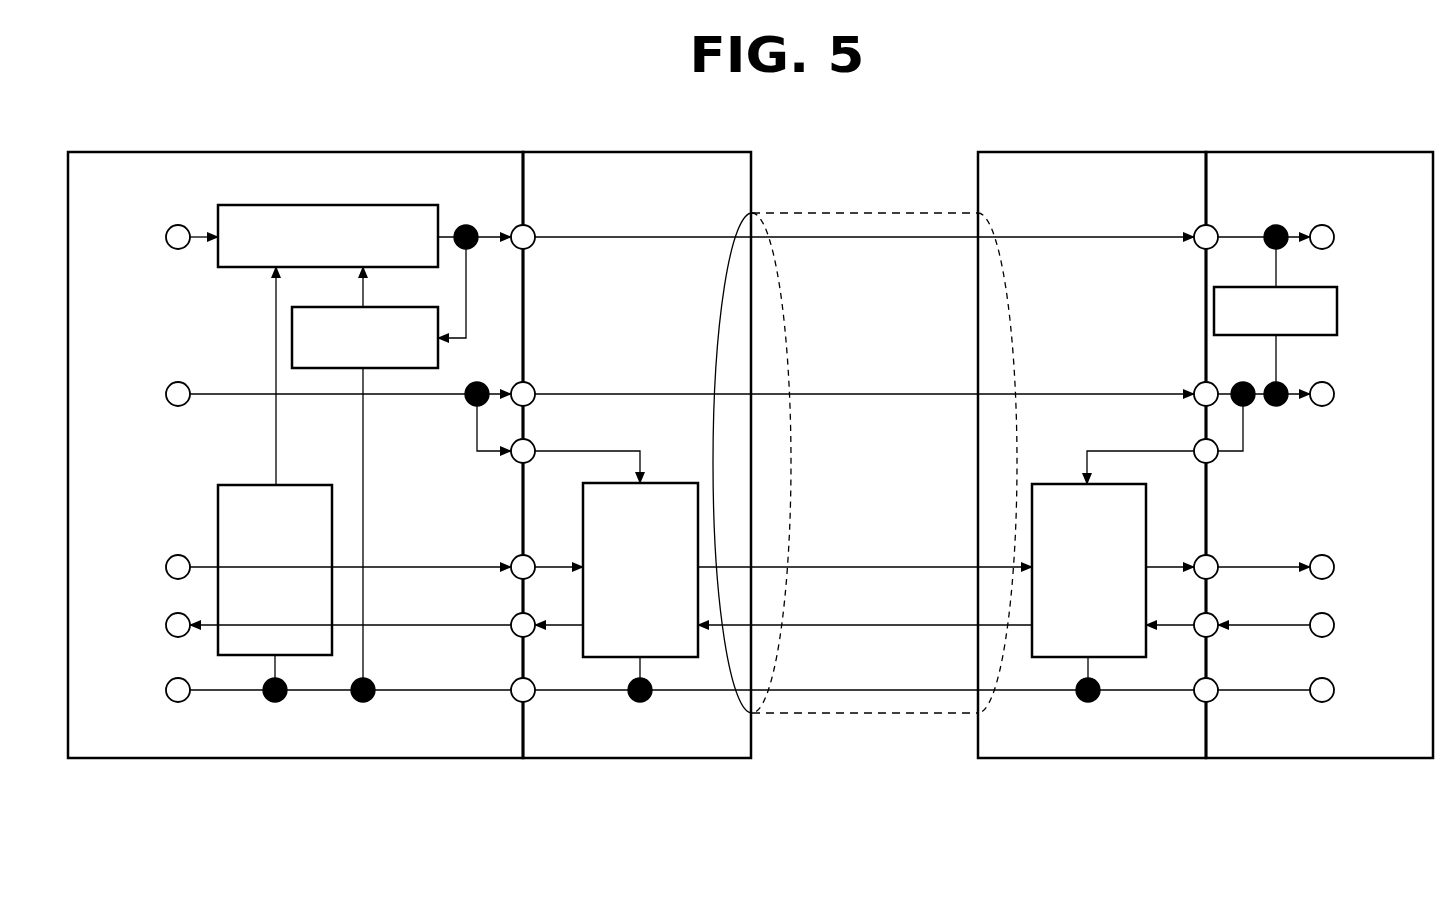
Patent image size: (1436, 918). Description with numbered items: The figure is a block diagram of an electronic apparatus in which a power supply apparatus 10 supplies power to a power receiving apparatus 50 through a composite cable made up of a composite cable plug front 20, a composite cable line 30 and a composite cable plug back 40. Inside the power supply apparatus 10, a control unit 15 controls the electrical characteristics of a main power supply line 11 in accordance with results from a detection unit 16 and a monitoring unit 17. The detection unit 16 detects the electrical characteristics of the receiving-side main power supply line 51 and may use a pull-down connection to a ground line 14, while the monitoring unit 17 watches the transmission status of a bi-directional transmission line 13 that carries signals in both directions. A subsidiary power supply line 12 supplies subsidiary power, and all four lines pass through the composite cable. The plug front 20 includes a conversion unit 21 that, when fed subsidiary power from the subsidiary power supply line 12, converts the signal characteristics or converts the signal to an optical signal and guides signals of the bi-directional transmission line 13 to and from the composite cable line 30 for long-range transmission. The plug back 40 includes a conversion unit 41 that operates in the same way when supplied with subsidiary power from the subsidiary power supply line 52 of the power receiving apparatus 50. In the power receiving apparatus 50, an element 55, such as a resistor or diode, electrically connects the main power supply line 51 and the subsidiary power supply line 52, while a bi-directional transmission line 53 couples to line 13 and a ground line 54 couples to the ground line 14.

The power supply apparatus 10 is at (140, 152).
The main power supply line 11 is at (165, 233).
The subsidiary power supply line 12 is at (165, 391).
The bi-directional transmission line 13 is at (157, 553).
The ground line 14 is at (165, 687).
The control unit 15 is at (408, 205).
The detection unit 16 is at (340, 307).
The monitoring unit 17 is at (232, 485).
The composite cable plug front 20 is at (604, 152).
The conversion unit 21 is at (662, 483).
The composite cable line 30 is at (858, 213).
The composite cable plug back 40 is at (1058, 152).
The conversion unit 41 is at (1062, 484).
The power receiving apparatus 50 is at (1306, 152).
The main power supply line 51 is at (1335, 233).
The subsidiary power supply line 52 is at (1335, 391).
The bi-directional transmission line 53 is at (1345, 553).
The ground line 54 is at (1335, 687).
The element 55 is at (1340, 305).